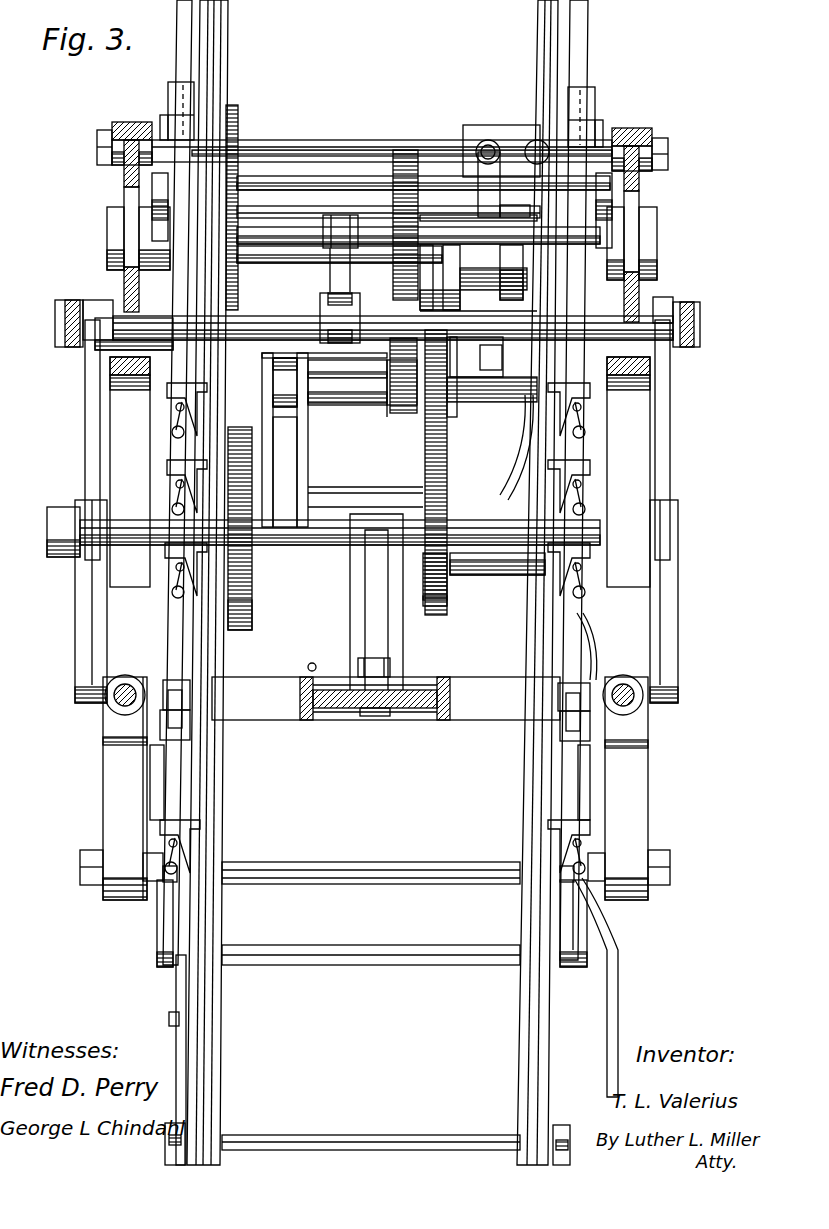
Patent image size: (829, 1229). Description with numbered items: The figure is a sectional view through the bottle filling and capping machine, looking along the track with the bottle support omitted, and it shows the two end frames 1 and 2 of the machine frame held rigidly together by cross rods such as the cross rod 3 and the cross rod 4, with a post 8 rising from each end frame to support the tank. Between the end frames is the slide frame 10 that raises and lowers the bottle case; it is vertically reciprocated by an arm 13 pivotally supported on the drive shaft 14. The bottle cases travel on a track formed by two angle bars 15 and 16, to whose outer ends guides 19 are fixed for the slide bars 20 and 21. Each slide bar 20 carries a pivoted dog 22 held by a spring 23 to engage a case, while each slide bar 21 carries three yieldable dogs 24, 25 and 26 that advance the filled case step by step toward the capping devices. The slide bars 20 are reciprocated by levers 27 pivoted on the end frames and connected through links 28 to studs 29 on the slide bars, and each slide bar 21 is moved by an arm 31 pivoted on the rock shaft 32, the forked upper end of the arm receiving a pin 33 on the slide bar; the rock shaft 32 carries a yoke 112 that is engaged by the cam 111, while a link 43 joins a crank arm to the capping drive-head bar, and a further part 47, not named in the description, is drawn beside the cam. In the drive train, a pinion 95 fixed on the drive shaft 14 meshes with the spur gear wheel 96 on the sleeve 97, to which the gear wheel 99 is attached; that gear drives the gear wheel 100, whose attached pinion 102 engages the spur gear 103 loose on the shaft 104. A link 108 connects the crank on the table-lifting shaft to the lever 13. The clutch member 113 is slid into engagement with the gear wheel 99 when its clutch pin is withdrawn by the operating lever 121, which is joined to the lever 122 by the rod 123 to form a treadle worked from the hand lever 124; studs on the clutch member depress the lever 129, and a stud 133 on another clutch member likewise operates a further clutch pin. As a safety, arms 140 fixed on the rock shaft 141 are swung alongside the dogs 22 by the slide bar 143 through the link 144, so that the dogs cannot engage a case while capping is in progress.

The end frame 1 is at (632, 805).
The end frame 2 is at (110, 787).
The cross rod 3 is at (373, 882).
The cross rod 4 is at (367, 148).
The post 8 is at (116, 703).
The slide frame 10 is at (472, 718).
The arm 13 is at (392, 648).
The shaft 14 is at (472, 575).
The angle bar 15 is at (540, 42).
The angle bar 16 is at (224, 58).
The guide 19 is at (168, 120).
The slide bar 20 is at (172, 800).
The slide bar 21 is at (180, 36).
The pivoted dog 22 is at (196, 838).
The spring 23 is at (178, 849).
The yieldable dog 24 is at (180, 556).
The yieldable dog 25 is at (190, 466).
The yieldable dog 26 is at (190, 395).
The lever 27 is at (80, 606).
The link 28 is at (90, 427).
The stud 29 is at (108, 330).
The arm 31 is at (157, 203).
The rock shaft 32 is at (289, 232).
The pin 33 is at (160, 192).
The link 43 is at (60, 318).
The shaft 47 is at (310, 306).
The pinion 95 is at (247, 552).
The spur gear wheel 96 is at (243, 625).
The sleeve 97 is at (333, 565).
The gear wheel 99 is at (436, 603).
The gear wheel 100 is at (425, 437).
The pinion 102 is at (400, 405).
The spur gear 103 is at (406, 160).
The shaft 104 is at (277, 258).
The link 108 is at (280, 388).
The cam 111 is at (320, 338).
The yoke 112 is at (338, 243).
The clutch member 113 is at (443, 590).
The operating lever 121 is at (592, 646).
The lever 122 is at (160, 918).
The rod 123 is at (378, 963).
The hand lever 124 is at (620, 972).
The lever 129 is at (523, 172).
The stud 133 is at (487, 362).
The arm 140 is at (183, 1156).
The rock shaft 141 is at (375, 1140).
The slide bar 143 is at (178, 985).
The link 144 is at (178, 1050).